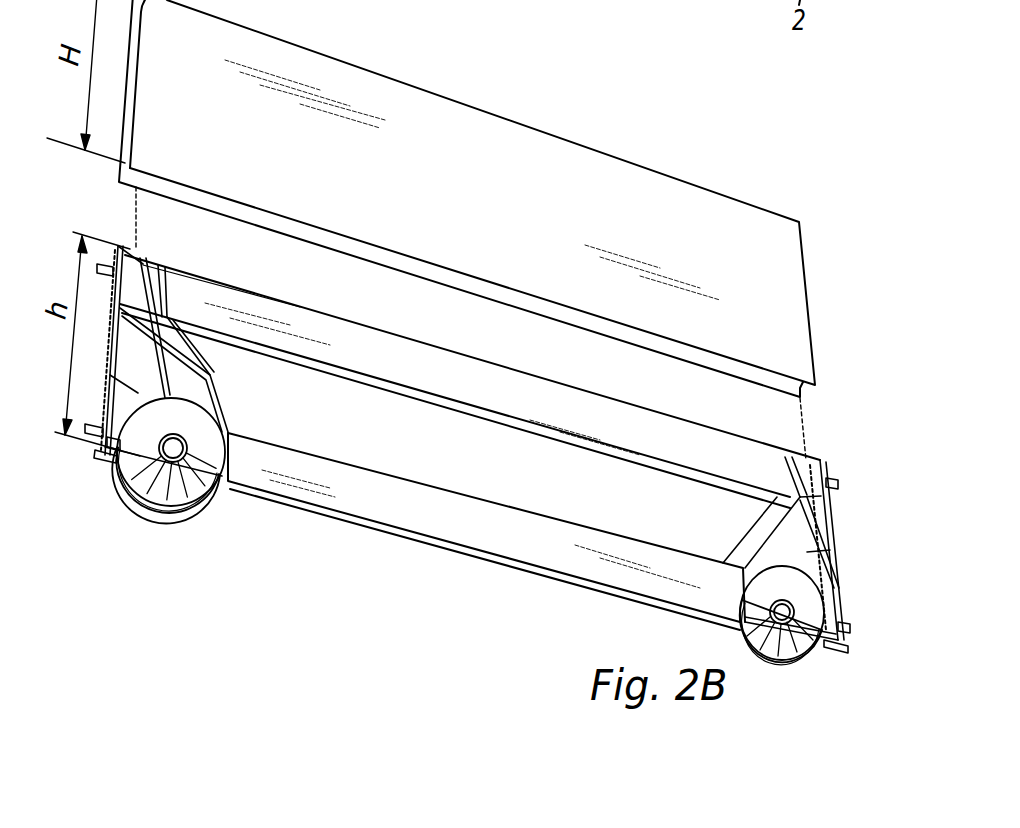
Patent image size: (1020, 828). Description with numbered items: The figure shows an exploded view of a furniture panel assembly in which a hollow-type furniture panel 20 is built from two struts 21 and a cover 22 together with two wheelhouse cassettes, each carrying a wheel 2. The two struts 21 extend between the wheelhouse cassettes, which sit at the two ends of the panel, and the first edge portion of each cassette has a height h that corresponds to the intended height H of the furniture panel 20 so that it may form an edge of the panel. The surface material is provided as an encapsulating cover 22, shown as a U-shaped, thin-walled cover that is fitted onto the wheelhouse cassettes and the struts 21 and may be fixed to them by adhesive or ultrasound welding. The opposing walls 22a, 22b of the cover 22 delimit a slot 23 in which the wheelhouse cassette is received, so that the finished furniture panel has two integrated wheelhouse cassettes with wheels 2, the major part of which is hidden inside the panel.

The wheel 2 is at (197, 503).
The furniture panel 20 is at (746, 226).
The strut 21 is at (488, 372).
The cover 22 is at (486, 143).
The opposing wall 22a is at (806, 282).
The opposing wall 22b is at (790, 386).
The slot 23 is at (804, 392).